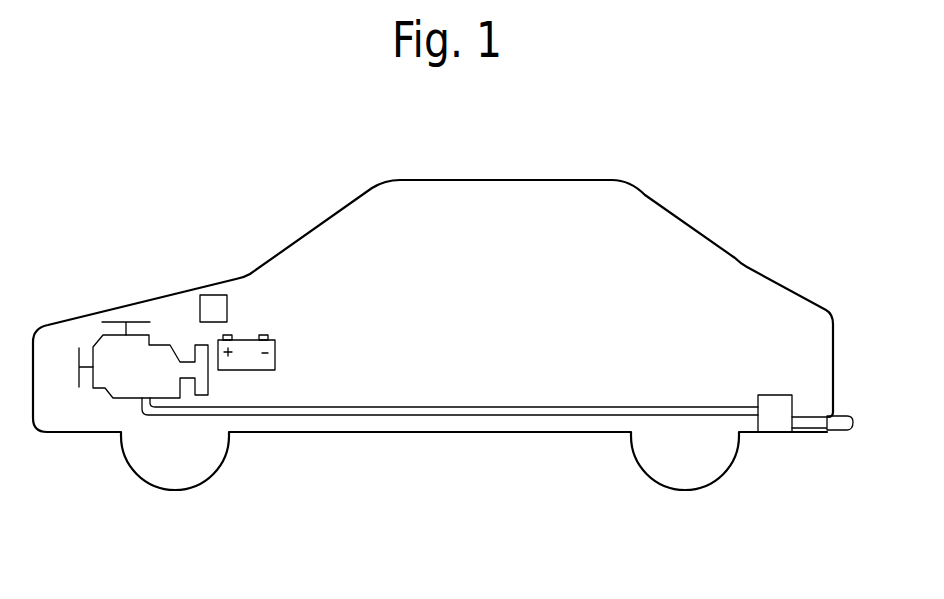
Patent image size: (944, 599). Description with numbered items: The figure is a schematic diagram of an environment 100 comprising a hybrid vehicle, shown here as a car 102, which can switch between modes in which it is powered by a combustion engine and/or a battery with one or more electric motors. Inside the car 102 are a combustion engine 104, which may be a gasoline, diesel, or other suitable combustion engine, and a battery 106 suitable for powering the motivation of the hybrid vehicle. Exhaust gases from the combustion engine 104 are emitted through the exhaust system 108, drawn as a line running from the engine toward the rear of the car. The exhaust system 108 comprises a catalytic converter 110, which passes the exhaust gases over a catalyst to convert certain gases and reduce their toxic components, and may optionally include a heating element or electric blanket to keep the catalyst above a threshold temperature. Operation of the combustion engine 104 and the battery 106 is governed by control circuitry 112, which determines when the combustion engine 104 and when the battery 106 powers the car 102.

The environment 100 is at (442, 502).
The car 102 is at (692, 223).
The combustion engine 104 is at (107, 353).
The battery 106 is at (265, 370).
The exhaust system 108 is at (838, 430).
The catalytic converter 110 is at (772, 423).
The control circuitry 112 is at (212, 305).